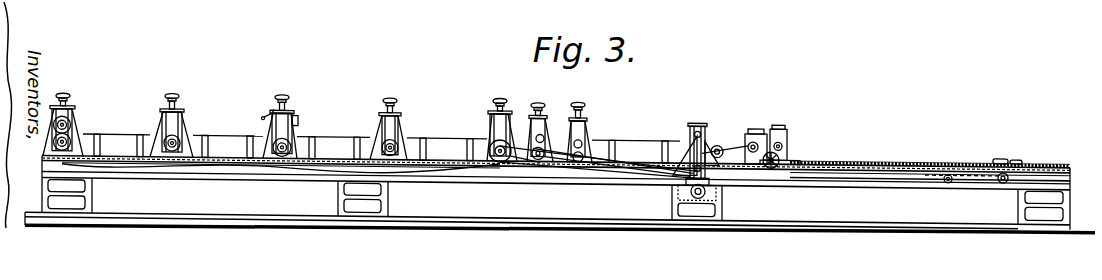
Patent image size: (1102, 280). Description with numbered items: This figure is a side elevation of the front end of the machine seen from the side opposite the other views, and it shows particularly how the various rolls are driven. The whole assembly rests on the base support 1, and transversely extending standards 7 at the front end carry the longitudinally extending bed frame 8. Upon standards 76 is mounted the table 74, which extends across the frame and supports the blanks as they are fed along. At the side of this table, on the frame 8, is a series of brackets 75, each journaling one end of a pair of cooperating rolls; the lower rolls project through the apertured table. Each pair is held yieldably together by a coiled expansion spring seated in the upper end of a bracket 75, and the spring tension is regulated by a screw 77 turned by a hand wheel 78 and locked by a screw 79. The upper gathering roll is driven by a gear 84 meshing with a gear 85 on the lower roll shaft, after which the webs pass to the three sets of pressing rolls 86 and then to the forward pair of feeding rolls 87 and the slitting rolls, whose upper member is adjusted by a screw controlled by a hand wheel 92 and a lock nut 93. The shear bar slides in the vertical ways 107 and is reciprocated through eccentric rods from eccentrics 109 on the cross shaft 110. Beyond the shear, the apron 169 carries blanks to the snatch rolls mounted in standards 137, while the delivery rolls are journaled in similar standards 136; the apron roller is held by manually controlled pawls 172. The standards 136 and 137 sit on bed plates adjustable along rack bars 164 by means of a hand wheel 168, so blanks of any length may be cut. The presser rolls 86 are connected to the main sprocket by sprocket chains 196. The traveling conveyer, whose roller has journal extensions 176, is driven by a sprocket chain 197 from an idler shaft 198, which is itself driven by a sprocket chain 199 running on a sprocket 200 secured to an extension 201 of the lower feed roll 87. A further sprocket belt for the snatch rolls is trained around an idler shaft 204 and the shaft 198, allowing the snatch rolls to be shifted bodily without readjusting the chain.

The base support 1 is at (902, 216).
The standard 7 is at (342, 192).
The bed frame 8 is at (143, 171).
The table 74 is at (105, 133).
The bracket 75 is at (187, 122).
The standard 76 is at (137, 146).
The screw 77 is at (400, 105).
The hand wheel 78 is at (71, 95).
The screw 79 is at (274, 113).
The gear 84 is at (72, 120).
The gear 85 is at (73, 129).
The pressing rolls 86 is at (168, 119).
The feeding rolls 87 is at (164, 160).
The hand wheel 92 is at (542, 98).
The lock nut 93 is at (532, 104).
The ways 107 is at (698, 116).
The eccentric 109 is at (677, 167).
The cross shaft 110 is at (691, 184).
The standard 136 is at (790, 127).
The standard 137 is at (755, 119).
The rack bar 164 is at (917, 152).
The hand wheel 168 is at (776, 155).
The apron 169 is at (706, 132).
The pawl 172 is at (712, 124).
The journal extension 176 is at (990, 173).
The sprocket chain 196 is at (211, 160).
The sprocket chain 197 is at (975, 156).
The idler shaft 198 is at (952, 169).
The sprocket chain 199 is at (870, 168).
The sprocket 200 is at (498, 157).
The extension 201 is at (515, 156).
The idler shaft 204 is at (641, 167).